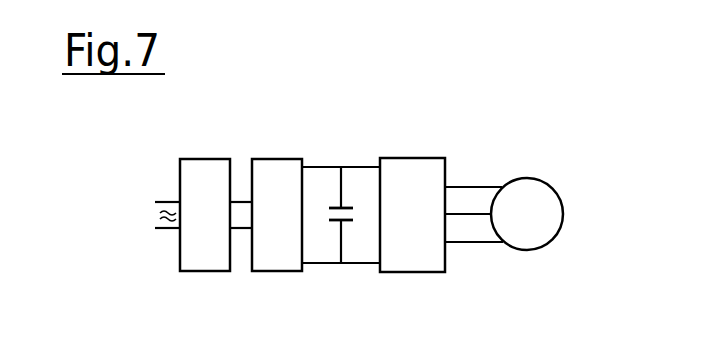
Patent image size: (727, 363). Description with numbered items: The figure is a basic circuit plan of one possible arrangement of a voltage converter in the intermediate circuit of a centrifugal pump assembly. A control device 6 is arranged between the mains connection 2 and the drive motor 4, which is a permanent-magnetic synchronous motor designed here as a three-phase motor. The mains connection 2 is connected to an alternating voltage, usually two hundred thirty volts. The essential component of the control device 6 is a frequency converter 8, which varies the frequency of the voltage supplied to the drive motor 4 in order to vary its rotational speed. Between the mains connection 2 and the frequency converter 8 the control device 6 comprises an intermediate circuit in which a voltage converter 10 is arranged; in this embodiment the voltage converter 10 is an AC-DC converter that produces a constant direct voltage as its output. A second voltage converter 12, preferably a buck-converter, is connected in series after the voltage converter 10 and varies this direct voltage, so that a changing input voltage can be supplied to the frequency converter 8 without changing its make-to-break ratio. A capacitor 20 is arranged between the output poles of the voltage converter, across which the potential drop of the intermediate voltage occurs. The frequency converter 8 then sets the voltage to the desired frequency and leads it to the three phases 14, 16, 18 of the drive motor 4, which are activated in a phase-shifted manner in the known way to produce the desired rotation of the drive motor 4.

The mains connection 2 is at (150, 218).
The drive motor 4 is at (556, 212).
The control device 6 is at (342, 164).
The frequency converter 8 is at (412, 240).
The voltage converter 10 is at (207, 273).
The second voltage converter 12 is at (264, 262).
The phase 14 is at (455, 186).
The phase 16 is at (480, 212).
The phase 18 is at (475, 243).
The intermediate circuit capacitor 20 is at (348, 225).